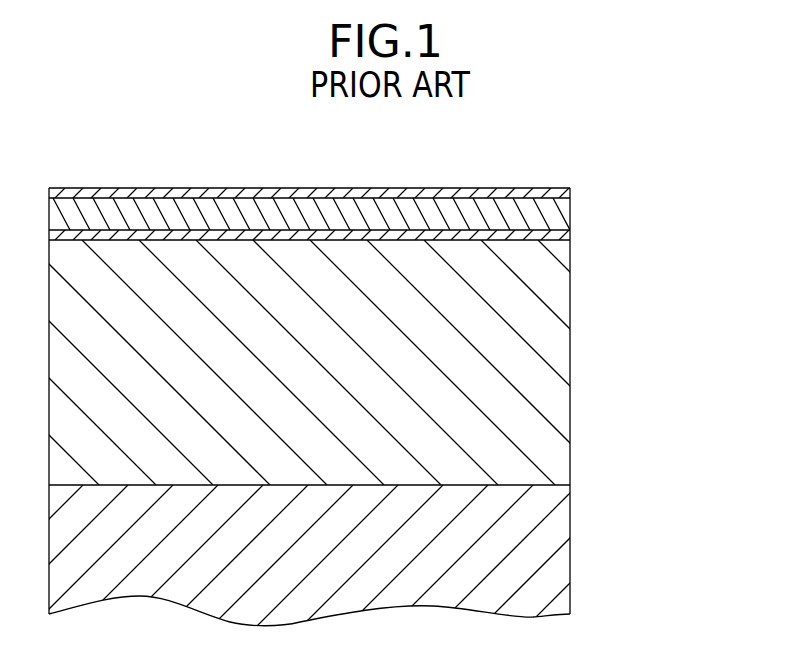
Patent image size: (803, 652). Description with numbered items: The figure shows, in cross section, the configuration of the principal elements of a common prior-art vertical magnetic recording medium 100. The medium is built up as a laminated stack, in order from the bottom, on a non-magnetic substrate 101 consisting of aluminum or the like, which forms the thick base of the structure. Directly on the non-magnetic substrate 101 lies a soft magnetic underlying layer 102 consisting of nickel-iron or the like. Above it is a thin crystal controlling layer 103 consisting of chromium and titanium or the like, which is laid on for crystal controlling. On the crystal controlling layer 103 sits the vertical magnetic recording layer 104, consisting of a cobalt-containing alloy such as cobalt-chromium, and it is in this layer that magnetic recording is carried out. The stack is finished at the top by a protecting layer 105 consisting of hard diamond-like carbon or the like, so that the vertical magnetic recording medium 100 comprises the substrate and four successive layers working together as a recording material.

The vertical magnetic recording medium 100 is at (548, 137).
The non-magnetic substrate 101 is at (570, 565).
The soft magnetic underlying layer 102 is at (570, 440).
The crystal controlling layer 103 is at (572, 237).
The vertical magnetic recording layer 104 is at (572, 220).
The protecting layer 105 is at (572, 195).